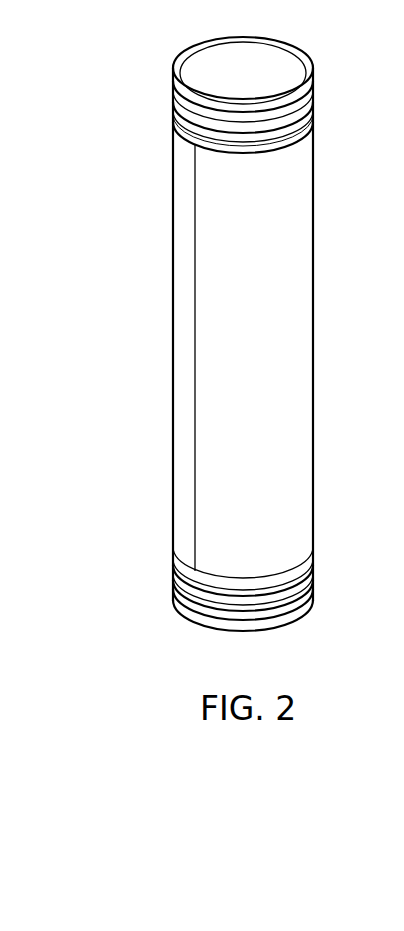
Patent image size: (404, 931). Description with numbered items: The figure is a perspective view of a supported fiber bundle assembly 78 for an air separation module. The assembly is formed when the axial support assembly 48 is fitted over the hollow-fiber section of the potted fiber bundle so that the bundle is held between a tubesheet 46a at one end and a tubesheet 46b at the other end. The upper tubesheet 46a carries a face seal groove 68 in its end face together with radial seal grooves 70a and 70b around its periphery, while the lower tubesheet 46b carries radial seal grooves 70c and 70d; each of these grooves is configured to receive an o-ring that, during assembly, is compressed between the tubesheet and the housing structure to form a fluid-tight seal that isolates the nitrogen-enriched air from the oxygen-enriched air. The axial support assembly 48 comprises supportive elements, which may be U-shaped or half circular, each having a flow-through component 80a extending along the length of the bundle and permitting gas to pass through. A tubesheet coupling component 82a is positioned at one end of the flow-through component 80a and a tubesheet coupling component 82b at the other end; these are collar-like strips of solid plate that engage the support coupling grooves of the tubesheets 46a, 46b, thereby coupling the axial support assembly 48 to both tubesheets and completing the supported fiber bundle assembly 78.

The supported fiber bundle assembly 78 is at (220, 331).
The tubesheet 46a is at (285, 305).
The tubesheet 46b is at (206, 624).
The face seal groove 68 is at (243, 78).
The radial seal groove 70a is at (318, 100).
The radial seal groove 70b is at (309, 124).
The radial seal groove 70c is at (301, 605).
The radial seal groove 70d is at (312, 575).
The tubesheet coupling component 82a is at (314, 150).
The tubesheet coupling component 82b is at (309, 562).
The axial support assembly 48 is at (153, 358).
The flow-through component 80a is at (295, 332).